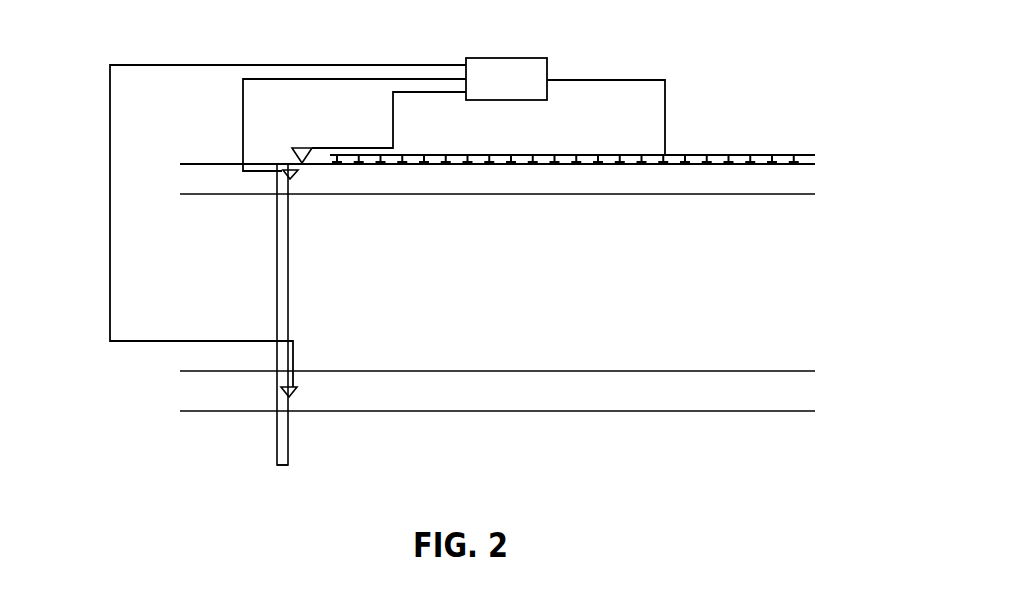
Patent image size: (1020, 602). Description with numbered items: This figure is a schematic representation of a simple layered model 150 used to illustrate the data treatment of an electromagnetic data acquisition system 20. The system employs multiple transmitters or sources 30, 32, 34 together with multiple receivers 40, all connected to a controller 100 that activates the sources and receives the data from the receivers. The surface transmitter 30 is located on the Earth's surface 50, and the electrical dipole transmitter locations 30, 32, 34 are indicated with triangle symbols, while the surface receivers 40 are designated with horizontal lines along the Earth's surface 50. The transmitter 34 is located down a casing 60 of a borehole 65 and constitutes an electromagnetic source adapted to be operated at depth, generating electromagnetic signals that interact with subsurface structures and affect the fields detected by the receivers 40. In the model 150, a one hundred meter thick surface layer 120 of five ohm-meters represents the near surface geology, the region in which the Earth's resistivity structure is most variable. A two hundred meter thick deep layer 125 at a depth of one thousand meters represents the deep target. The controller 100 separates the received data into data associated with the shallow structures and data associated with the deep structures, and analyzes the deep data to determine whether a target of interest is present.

The electromagnetic data acquisition system 20 is at (702, 80).
The surface transmitter 30 is at (292, 156).
The transmitter 32 is at (294, 180).
The casing transmitter 34 is at (297, 386).
The receivers 40 is at (733, 165).
The Earth's surface 50 is at (201, 164).
The casing 60 is at (290, 272).
The borehole 65 is at (265, 480).
The controller 100 is at (548, 63).
The surface layer 120 is at (124, 190).
The deep layer 125 is at (128, 391).
The layered model 150 is at (755, 354).